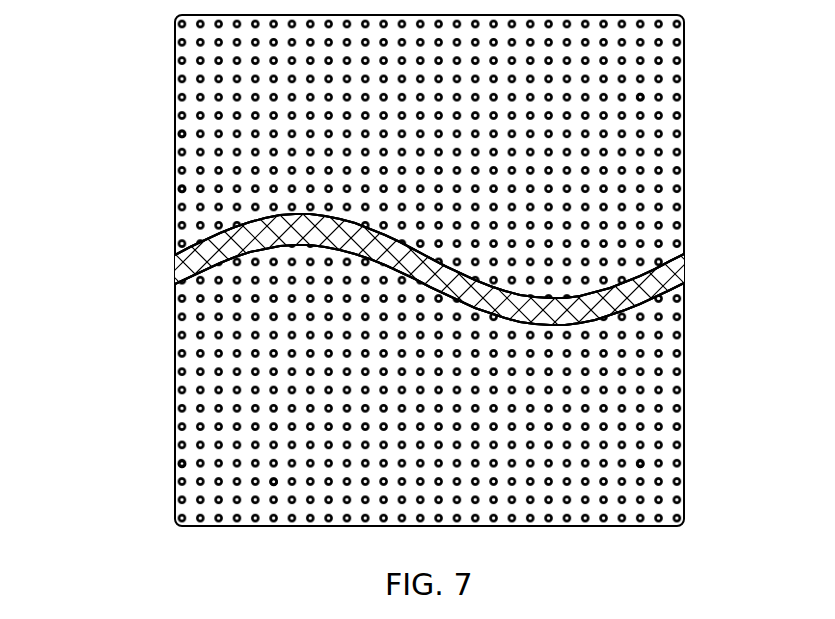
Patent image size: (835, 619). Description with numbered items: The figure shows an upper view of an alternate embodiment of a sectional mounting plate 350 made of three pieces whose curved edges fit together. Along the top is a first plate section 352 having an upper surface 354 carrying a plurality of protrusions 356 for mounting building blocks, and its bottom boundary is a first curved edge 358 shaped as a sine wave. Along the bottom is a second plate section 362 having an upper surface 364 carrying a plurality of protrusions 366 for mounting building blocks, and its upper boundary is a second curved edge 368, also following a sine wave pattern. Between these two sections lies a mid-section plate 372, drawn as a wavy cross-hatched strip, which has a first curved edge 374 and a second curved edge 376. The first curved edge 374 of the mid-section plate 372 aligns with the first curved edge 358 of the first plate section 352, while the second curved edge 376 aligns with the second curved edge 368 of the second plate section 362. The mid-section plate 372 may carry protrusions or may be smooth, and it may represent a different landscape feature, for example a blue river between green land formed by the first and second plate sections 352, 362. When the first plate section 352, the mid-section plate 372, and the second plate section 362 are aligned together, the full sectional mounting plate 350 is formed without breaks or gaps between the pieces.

The sectional mounting plate 350 is at (105, 75).
The first plate section 352 is at (178, 122).
The upper surface 354 is at (180, 178).
The plurality of protrusions 356 is at (643, 96).
The first curved edge 358 is at (660, 278).
The second plate section 362 is at (180, 463).
The upper surface 364 is at (273, 484).
The plurality of protrusions 366 is at (643, 464).
The second curved edge 368 is at (182, 262).
The mid-section plate 372 is at (660, 289).
The first curved edge 374 is at (632, 284).
The second curved edge 376 is at (632, 311).